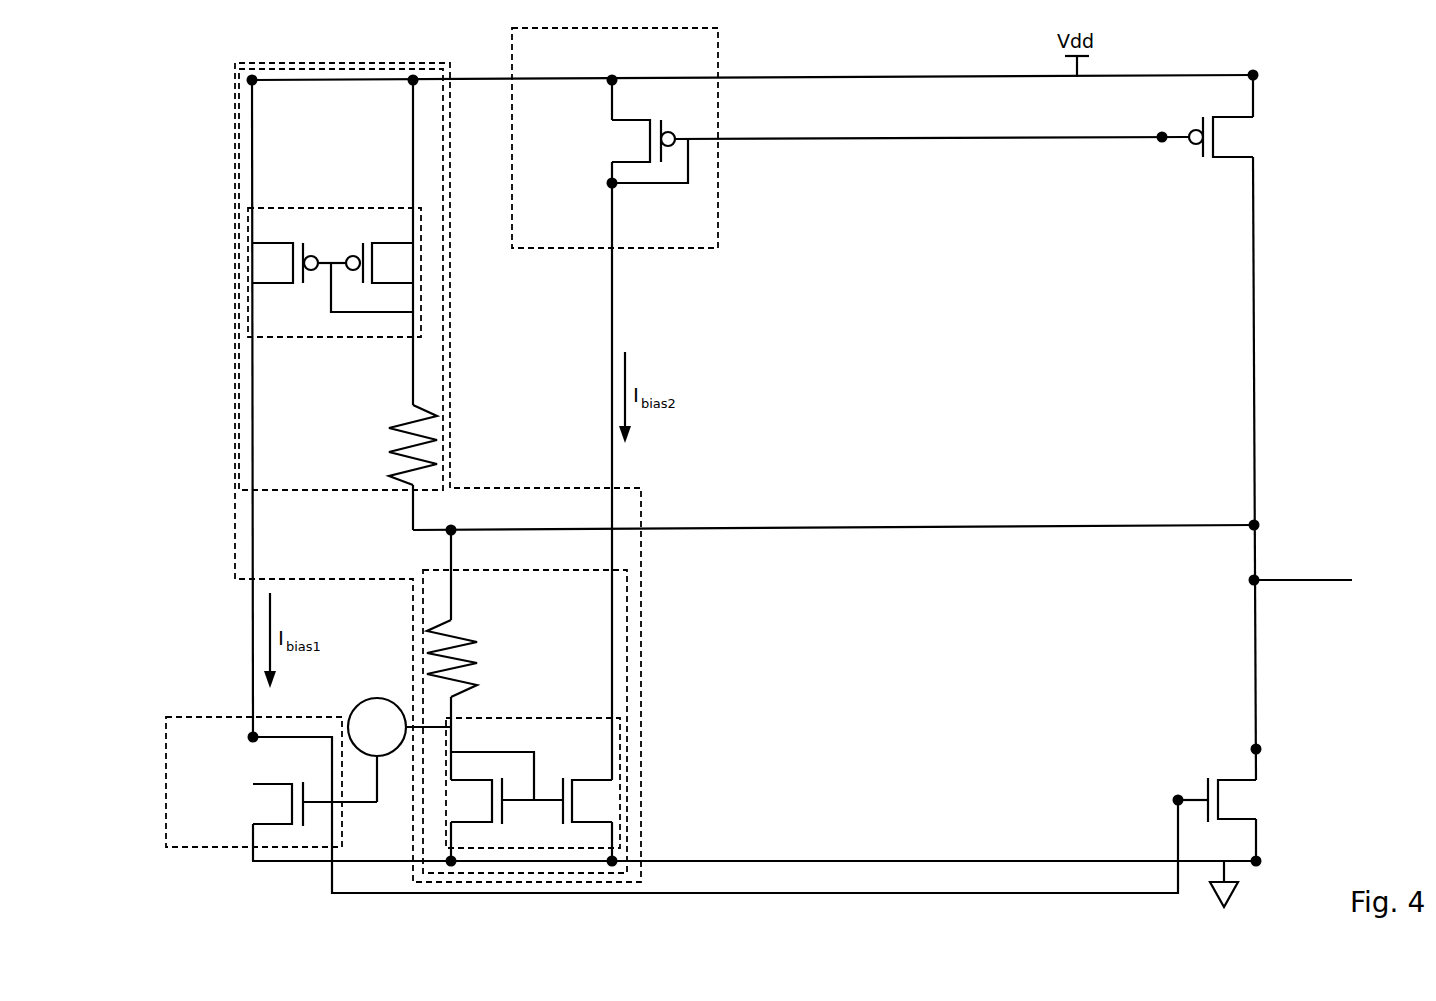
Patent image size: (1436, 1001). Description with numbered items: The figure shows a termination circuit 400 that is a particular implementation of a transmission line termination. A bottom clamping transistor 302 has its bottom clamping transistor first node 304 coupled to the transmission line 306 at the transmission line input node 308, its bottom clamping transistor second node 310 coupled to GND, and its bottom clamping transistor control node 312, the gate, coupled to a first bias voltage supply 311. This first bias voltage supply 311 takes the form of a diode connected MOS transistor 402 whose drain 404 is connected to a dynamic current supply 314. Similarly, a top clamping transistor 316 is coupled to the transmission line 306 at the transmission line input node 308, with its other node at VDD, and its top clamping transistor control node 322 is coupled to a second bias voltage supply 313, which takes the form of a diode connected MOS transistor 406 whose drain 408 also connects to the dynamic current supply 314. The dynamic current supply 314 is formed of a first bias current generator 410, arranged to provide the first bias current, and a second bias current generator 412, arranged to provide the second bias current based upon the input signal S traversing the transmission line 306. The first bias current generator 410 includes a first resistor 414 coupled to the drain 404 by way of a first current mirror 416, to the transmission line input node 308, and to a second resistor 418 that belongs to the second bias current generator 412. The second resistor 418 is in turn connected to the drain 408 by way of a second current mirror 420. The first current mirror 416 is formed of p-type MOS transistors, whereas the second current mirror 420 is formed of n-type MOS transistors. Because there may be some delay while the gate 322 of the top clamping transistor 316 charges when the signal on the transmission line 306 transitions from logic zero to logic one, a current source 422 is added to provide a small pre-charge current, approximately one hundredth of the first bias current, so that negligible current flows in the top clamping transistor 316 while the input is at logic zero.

The bottom clamping transistor 302 is at (1243, 781).
The bottom clamping transistor first node 304 is at (1258, 748).
The transmission line 306 is at (1295, 582).
The transmission line input node 308 is at (1254, 523).
The bottom clamping transistor second node 310 is at (1263, 860).
The first bias voltage supply 311 is at (226, 716).
The bottom clamping transistor control node 312 is at (1178, 797).
The second bias voltage supply 313 is at (718, 193).
The dynamic current supply 314 is at (641, 488).
The top clamping transistor 316 is at (1238, 118).
The top clamping transistor control node 322 is at (1160, 140).
The termination circuit 400 is at (1303, 458).
The diode connected MOS transistor 402 is at (278, 786).
The drain 404 is at (251, 739).
The diode connected MOS transistor 406 is at (622, 120).
The drain 408 is at (612, 186).
The first bias current generator 410 is at (330, 488).
The second bias current generator 412 is at (600, 571).
The first resistor 414 is at (404, 425).
The first current mirror 416 is at (336, 340).
The second resistor 418 is at (463, 640).
The second current mirror 420 is at (550, 718).
The current source 422 is at (399, 750).